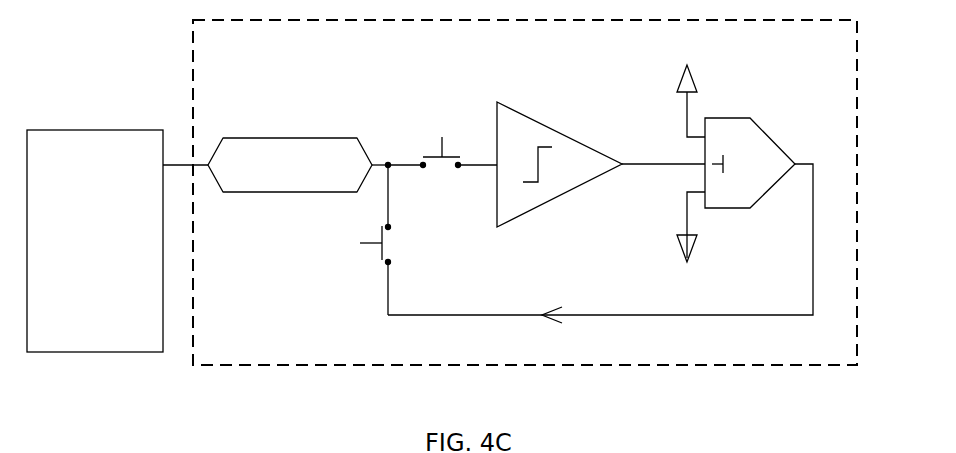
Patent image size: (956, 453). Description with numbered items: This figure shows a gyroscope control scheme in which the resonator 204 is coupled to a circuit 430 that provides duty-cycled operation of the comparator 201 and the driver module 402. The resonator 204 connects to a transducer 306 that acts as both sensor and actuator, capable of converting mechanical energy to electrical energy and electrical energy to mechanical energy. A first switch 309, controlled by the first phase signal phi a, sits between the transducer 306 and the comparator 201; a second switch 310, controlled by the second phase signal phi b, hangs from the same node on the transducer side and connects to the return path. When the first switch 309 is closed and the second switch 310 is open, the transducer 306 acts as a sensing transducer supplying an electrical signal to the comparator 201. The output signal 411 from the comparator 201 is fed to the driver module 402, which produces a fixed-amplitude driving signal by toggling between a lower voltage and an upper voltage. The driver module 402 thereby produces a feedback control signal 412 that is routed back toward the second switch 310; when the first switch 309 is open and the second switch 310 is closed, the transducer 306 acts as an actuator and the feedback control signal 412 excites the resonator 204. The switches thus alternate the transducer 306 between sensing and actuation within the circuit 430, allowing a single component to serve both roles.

The resonator 204 is at (117, 210).
The transducer 306 is at (298, 134).
The first switch 309 is at (425, 130).
The second switch 310 is at (342, 270).
The comparator 201 is at (559, 147).
The output signal 411 is at (663, 152).
The driver module 402 is at (748, 165).
The feedback control signal 412 is at (600, 243).
The circuit 430 is at (851, 45).